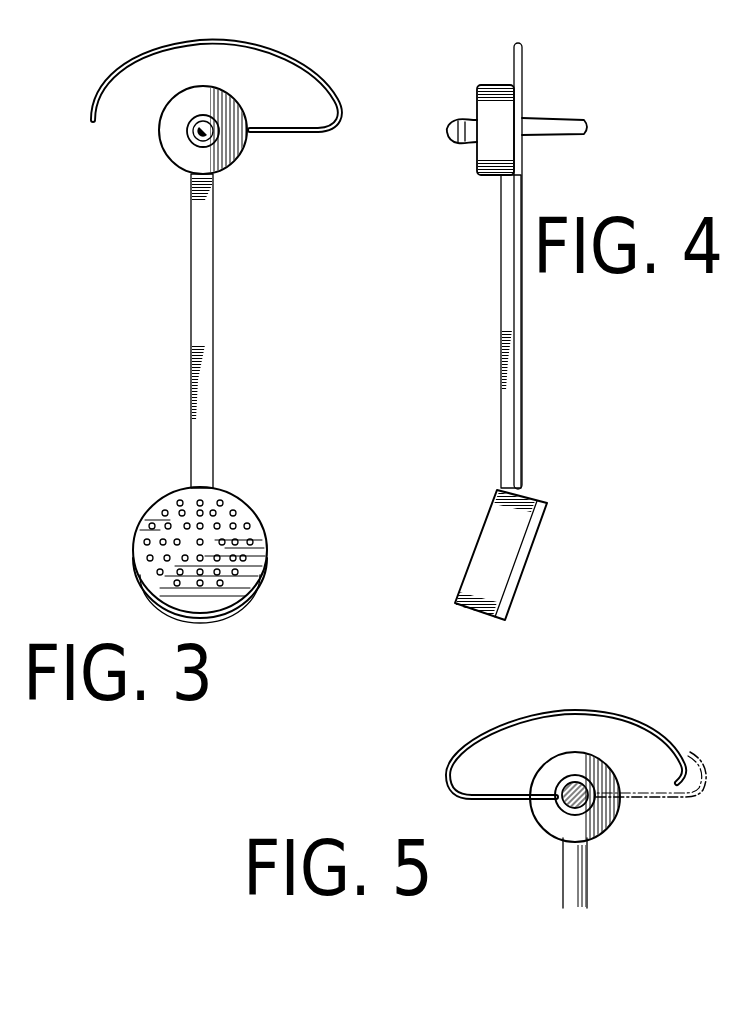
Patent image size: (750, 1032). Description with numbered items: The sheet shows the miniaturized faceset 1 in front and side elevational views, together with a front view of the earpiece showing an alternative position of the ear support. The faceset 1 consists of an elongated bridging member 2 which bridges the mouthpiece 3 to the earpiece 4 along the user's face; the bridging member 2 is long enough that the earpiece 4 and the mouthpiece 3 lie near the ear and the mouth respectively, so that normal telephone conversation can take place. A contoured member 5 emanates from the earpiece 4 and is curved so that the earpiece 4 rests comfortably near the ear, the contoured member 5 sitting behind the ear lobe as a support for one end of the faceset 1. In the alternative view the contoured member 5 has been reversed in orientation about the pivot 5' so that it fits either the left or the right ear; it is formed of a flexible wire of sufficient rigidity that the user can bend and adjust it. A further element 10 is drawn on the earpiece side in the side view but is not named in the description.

In FIG. 3, the faceset 1 is at (172, 420).
In FIG. 4, the faceset 1 is at (482, 350).
In FIG. 3, the bridging member 2 is at (215, 293).
In FIG. 4, the bridging member 2 is at (521, 323).
In FIG. 5, the bridging member 2 is at (587, 887).
In FIG. 3, the mouthpiece 3 is at (267, 557).
In FIG. 4, the mouthpiece 3 is at (532, 558).
In FIG. 3, the earpiece 4 is at (233, 158).
In FIG. 4, the earpiece 4 is at (477, 93).
In FIG. 5, the earpiece 4 is at (530, 806).
In FIG. 3, the contoured member 5 is at (216, 83).
In FIG. 4, the contoured member 5 is at (532, 266).
In FIG. 5, the contoured member 5 is at (577, 733).
In FIG. 5, the pivot 5' is at (602, 783).
In FIG. 4, the transverse pin 10 is at (548, 137).